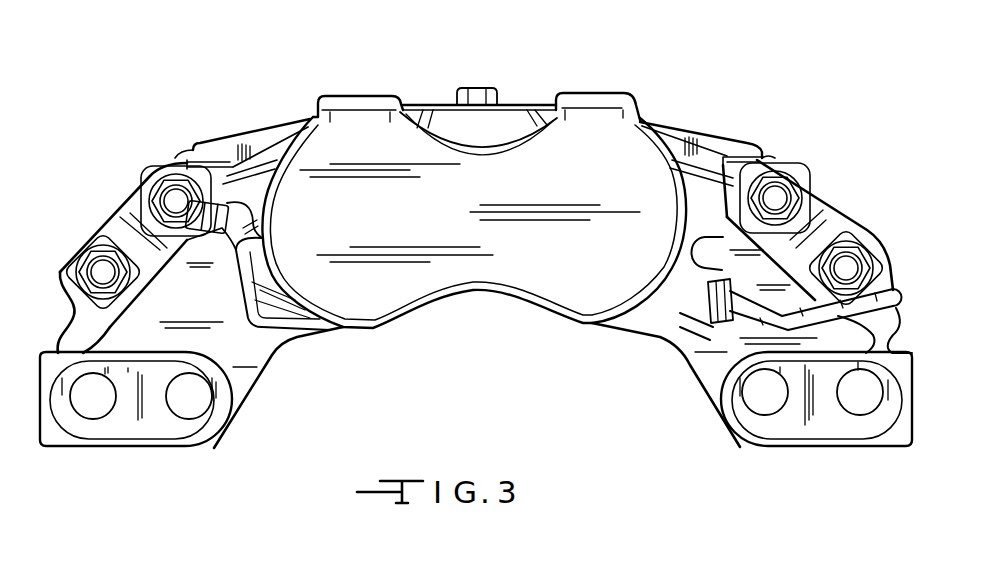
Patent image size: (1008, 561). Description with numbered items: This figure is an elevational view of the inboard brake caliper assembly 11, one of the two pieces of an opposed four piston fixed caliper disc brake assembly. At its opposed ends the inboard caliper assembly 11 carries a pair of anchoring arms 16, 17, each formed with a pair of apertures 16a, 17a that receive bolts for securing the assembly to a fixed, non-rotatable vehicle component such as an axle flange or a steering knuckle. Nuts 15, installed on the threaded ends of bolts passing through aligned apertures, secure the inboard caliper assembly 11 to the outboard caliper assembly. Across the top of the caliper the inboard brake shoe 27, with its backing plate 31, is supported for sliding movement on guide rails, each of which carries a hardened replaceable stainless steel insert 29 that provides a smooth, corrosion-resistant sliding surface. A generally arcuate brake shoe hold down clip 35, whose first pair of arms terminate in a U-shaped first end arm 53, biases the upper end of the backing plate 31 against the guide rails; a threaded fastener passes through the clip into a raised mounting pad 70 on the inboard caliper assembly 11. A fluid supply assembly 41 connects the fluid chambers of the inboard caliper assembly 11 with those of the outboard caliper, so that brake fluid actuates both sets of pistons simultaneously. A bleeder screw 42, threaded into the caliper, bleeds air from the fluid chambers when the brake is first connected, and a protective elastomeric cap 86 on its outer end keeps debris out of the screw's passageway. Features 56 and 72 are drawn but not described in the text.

The inboard brake caliper assembly 11 is at (478, 307).
The nuts 15 is at (160, 180).
The anchoring arm 16 is at (149, 436).
The apertures 16a is at (86, 412).
The anchoring arm 17 is at (805, 438).
The apertures 17a is at (757, 410).
The inboard brake shoe 27 is at (716, 125).
The hardened replaceable insert 29 is at (175, 158).
The backing plate 31 is at (233, 137).
The brake shoe hold down clip 35 is at (541, 103).
The fluid supply assembly 41 is at (900, 288).
The bleeder screw 42 is at (242, 233).
The first end arm 53 is at (313, 117).
The right housing projection 56 is at (642, 118).
The raised mounting pad 70 is at (500, 130).
The bridge bolt 72 is at (479, 88).
The protective elastomeric cap 86 is at (185, 260).